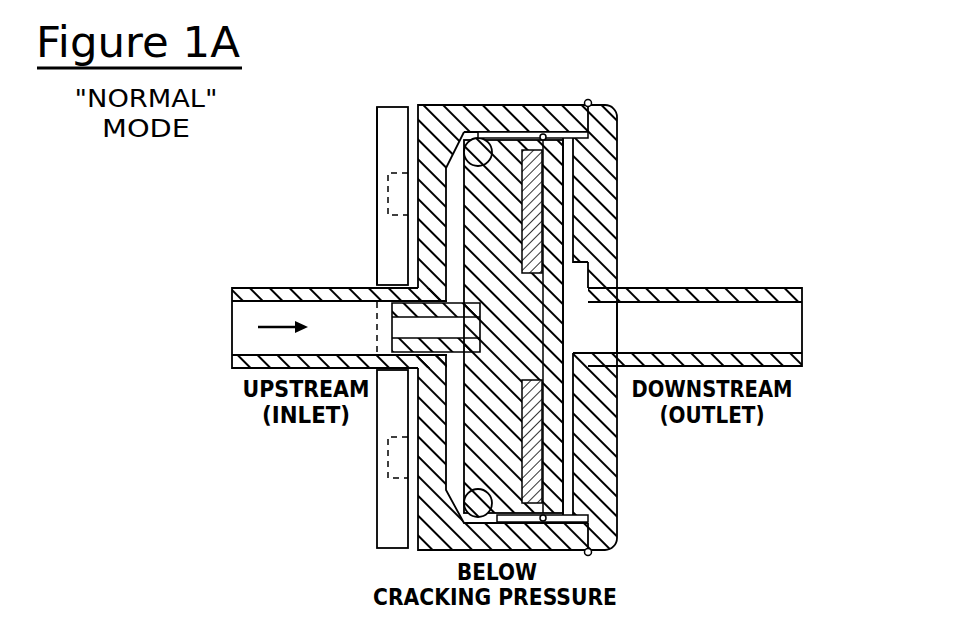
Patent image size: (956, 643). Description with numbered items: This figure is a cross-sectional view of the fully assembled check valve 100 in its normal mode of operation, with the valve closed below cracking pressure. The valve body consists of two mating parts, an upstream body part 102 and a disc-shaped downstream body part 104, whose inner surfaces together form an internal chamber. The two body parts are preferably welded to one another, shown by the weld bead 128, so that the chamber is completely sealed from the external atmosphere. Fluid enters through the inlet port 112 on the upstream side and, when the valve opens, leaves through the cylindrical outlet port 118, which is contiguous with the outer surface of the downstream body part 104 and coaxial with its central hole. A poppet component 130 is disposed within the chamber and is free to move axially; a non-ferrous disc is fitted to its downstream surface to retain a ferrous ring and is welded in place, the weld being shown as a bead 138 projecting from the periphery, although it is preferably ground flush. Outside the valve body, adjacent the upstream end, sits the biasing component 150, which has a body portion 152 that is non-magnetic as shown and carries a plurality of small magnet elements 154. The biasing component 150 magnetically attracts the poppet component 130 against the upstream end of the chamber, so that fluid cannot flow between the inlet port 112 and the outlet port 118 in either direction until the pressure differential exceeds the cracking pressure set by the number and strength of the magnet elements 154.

The check valve 100 is at (461, 64).
The upstream body part 102 is at (490, 92).
The downstream body part 104 is at (626, 225).
The inlet port 112 is at (258, 288).
The outlet port 118 is at (688, 288).
The weld bead 128 is at (591, 103).
The poppet component 130 is at (529, 307).
The weld bead 138 is at (543, 134).
The biasing component 150 is at (386, 94).
The body portion 152 is at (377, 127).
The magnet elements 154 is at (388, 198).